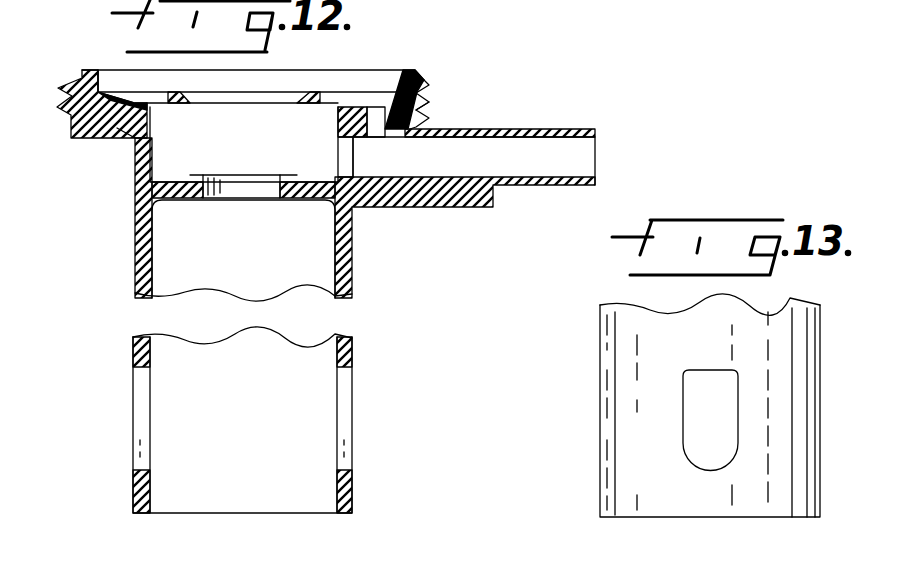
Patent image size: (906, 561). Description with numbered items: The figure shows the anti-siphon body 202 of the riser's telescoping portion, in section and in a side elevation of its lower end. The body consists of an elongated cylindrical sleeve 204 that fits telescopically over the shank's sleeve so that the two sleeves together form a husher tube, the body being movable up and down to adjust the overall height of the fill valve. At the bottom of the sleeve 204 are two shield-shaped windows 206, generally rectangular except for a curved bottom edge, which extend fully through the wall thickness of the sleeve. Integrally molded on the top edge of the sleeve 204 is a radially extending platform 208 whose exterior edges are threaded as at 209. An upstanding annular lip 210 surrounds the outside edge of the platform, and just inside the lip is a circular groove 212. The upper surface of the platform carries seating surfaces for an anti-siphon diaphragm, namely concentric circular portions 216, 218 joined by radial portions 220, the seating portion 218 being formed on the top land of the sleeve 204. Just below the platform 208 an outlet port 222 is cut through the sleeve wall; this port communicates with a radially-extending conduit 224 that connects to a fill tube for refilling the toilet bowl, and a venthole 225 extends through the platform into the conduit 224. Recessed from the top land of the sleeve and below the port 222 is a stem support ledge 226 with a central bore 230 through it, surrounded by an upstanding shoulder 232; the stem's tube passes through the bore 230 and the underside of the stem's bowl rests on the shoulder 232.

In FIG. 12, the anti-siphon body 202 is at (440, 78).
In FIG. 12, the elongated cylindrical sleeve 204 is at (140, 293).
In FIG. 13, the elongated cylindrical sleeve 204 is at (610, 388).
In FIG. 12, the shield-shaped windows 206 is at (133, 425).
In FIG. 13, the shield-shaped windows 206 is at (693, 440).
In FIG. 12, the radially extending platform 208 is at (112, 128).
In FIG. 12, the threads 209 is at (418, 100).
In FIG. 12, the upstanding annular lip 210 is at (80, 70).
In FIG. 12, the circular groove 212 is at (396, 100).
In FIG. 12, the concentric circular seating portion 216 is at (97, 90).
In FIG. 12, the concentric circular seating portion 218 is at (345, 108).
In FIG. 12, the radial portions 220 is at (118, 97).
In FIG. 12, the outlet port 222 is at (343, 155).
In FIG. 12, the radially-extending conduit 224 is at (578, 128).
In FIG. 12, the venthole 225 is at (378, 140).
In FIG. 12, the stem support ledge 226 is at (215, 178).
In FIG. 12, the central bore 230 is at (253, 192).
In FIG. 12, the upstanding shoulder 232 is at (217, 145).